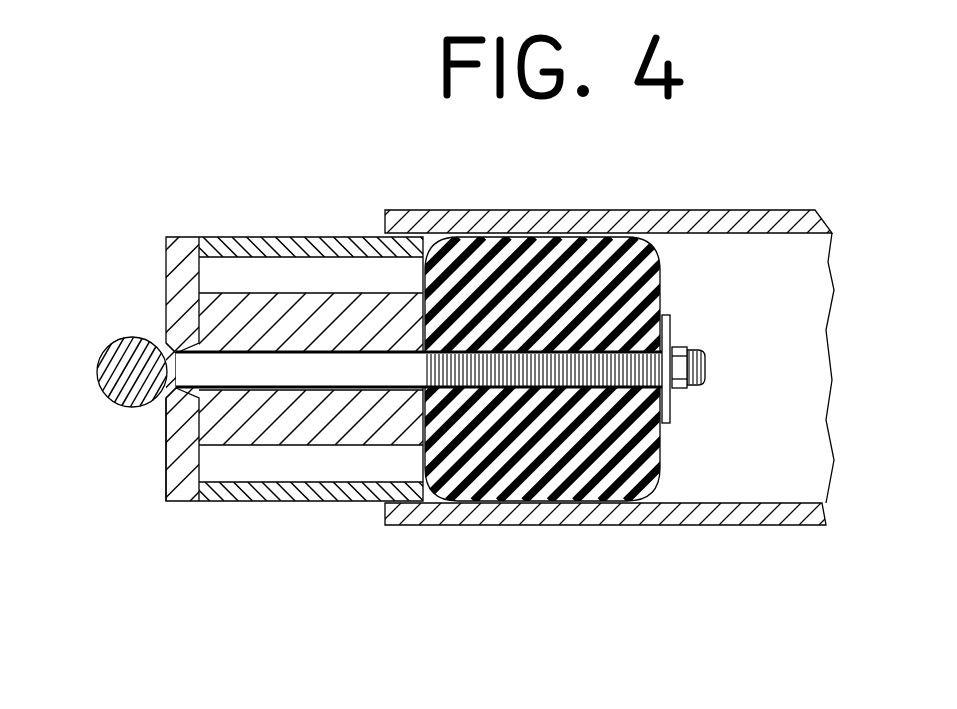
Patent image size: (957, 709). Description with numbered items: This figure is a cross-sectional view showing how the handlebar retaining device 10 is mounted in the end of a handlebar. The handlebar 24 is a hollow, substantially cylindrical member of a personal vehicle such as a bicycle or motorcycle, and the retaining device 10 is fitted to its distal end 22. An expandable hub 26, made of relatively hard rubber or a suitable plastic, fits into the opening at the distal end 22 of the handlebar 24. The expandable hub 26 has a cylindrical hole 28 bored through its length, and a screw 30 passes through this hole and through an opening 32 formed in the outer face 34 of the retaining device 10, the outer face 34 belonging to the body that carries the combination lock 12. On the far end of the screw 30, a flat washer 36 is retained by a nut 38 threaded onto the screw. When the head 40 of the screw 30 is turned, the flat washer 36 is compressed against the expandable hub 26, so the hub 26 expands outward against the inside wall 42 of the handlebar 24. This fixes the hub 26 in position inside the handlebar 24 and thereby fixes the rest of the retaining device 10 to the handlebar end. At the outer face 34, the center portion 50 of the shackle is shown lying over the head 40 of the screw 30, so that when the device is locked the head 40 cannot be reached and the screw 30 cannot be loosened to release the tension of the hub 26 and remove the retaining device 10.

The handlebar retaining device 10 is at (334, 156).
The combination lock 12 is at (310, 315).
The distal end 22 is at (383, 508).
The handlebar 24 is at (723, 220).
The expandable hub 26 is at (647, 275).
The cylindrical hole 28 is at (603, 388).
The screw 30 is at (348, 377).
The opening 32 is at (166, 395).
The outer face 34 is at (166, 490).
The flat washer 36 is at (665, 315).
The nut 38 is at (678, 348).
The head 40 is at (166, 347).
The inside wall 42 is at (803, 236).
The center portion 50 is at (110, 365).